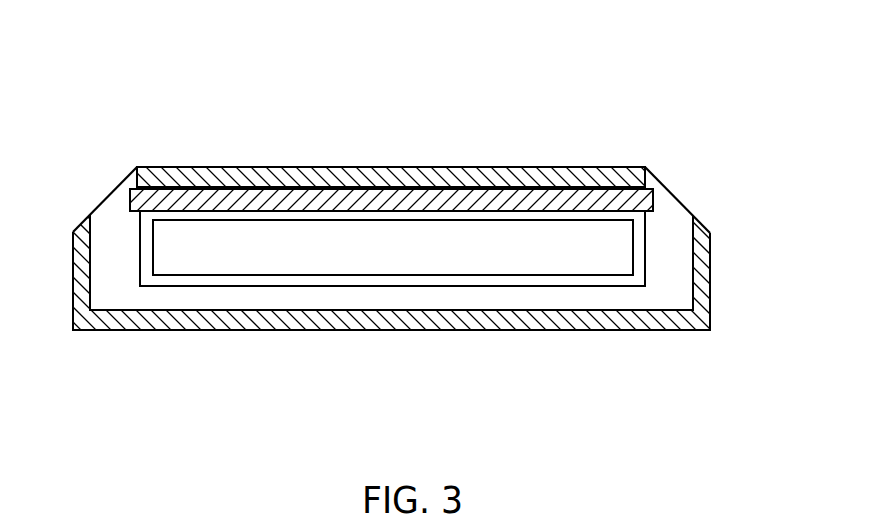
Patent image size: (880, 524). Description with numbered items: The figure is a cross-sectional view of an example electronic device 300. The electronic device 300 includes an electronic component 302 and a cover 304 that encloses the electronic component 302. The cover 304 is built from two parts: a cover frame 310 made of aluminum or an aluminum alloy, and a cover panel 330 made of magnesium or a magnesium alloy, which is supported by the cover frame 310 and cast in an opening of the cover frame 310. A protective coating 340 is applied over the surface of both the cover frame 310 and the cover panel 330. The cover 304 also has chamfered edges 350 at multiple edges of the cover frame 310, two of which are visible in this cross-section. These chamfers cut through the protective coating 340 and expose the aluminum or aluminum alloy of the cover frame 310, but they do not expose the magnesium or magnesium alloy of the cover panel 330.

The electronic device 300 is at (140, 55).
The electronic component 302 is at (262, 262).
The cover 304 is at (160, 355).
The cover frame 310 is at (402, 298).
The cover panel 330 is at (578, 197).
The protective coating 340 is at (243, 182).
The chamfered edges 350 is at (97, 195).